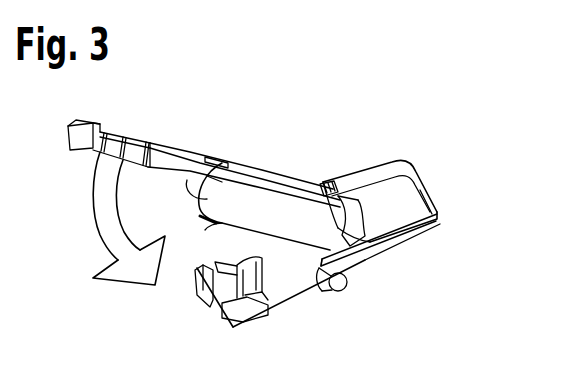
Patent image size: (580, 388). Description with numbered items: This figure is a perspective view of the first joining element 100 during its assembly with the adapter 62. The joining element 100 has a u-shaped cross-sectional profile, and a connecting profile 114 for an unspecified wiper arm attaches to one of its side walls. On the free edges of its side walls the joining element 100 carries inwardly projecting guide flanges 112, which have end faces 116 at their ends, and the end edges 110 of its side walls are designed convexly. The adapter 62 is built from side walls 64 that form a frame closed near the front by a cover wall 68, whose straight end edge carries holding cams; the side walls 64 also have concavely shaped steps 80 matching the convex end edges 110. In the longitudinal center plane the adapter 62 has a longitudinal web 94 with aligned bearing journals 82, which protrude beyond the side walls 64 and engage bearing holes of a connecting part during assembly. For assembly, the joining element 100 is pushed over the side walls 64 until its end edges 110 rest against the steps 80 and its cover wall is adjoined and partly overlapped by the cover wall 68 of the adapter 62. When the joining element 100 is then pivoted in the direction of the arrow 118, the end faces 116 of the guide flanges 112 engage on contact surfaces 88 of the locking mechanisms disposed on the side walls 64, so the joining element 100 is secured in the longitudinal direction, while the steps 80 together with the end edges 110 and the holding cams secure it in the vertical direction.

The adapter 62 is at (447, 187).
The side walls 64 is at (393, 208).
The cover wall 68 is at (375, 173).
The steps 80 is at (380, 235).
The bearing journals 82 is at (337, 285).
The contact surfaces 88 is at (276, 301).
The longitudinal web 94 is at (298, 293).
The first joining element 100 is at (263, 160).
The end edges 110 is at (361, 255).
The guide flanges 112 is at (220, 231).
The connecting profile 114 is at (135, 137).
The end faces 116 is at (213, 159).
The arrow 118 is at (110, 220).